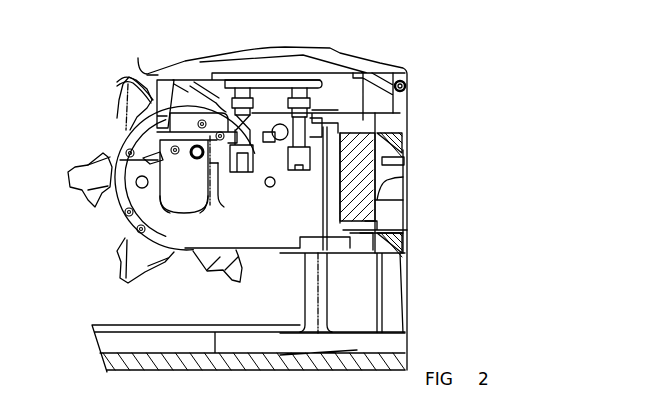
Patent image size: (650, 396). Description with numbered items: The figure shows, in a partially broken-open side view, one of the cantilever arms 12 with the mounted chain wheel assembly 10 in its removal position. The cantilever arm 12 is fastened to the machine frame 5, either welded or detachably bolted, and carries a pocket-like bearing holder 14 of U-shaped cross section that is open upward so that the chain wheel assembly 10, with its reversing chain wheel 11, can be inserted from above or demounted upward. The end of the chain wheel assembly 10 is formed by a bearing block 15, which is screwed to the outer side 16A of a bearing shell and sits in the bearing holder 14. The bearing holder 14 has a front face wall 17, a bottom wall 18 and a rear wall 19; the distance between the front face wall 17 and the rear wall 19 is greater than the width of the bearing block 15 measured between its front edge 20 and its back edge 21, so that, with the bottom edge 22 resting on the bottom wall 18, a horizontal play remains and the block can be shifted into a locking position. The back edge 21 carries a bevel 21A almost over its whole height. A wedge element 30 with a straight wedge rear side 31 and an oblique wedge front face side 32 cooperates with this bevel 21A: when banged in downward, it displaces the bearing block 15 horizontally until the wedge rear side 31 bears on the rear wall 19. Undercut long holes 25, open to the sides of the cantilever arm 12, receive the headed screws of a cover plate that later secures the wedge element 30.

The machine frame 5 is at (414, 161).
The chain wheel assembly 10 is at (108, 115).
The reversing chain wheel 11 is at (131, 86).
The cantilever arm 12 is at (268, 232).
The bearing holder 14 is at (214, 202).
The bearing block 15 is at (188, 197).
The outer side of bearing shell 16A is at (186, 110).
The front face wall 17 is at (221, 190).
The bottom wall 18 is at (204, 212).
The rear wall 19 is at (132, 163).
The front edge 20 is at (211, 172).
The back edge 21 is at (130, 154).
The bevel 21A is at (163, 152).
The bottom edge 22 is at (172, 211).
The undercut long hole 25 is at (300, 172).
The wedge element 30 is at (164, 86).
The wedge rear side 31 is at (139, 58).
The wedge front face side 32 is at (172, 112).